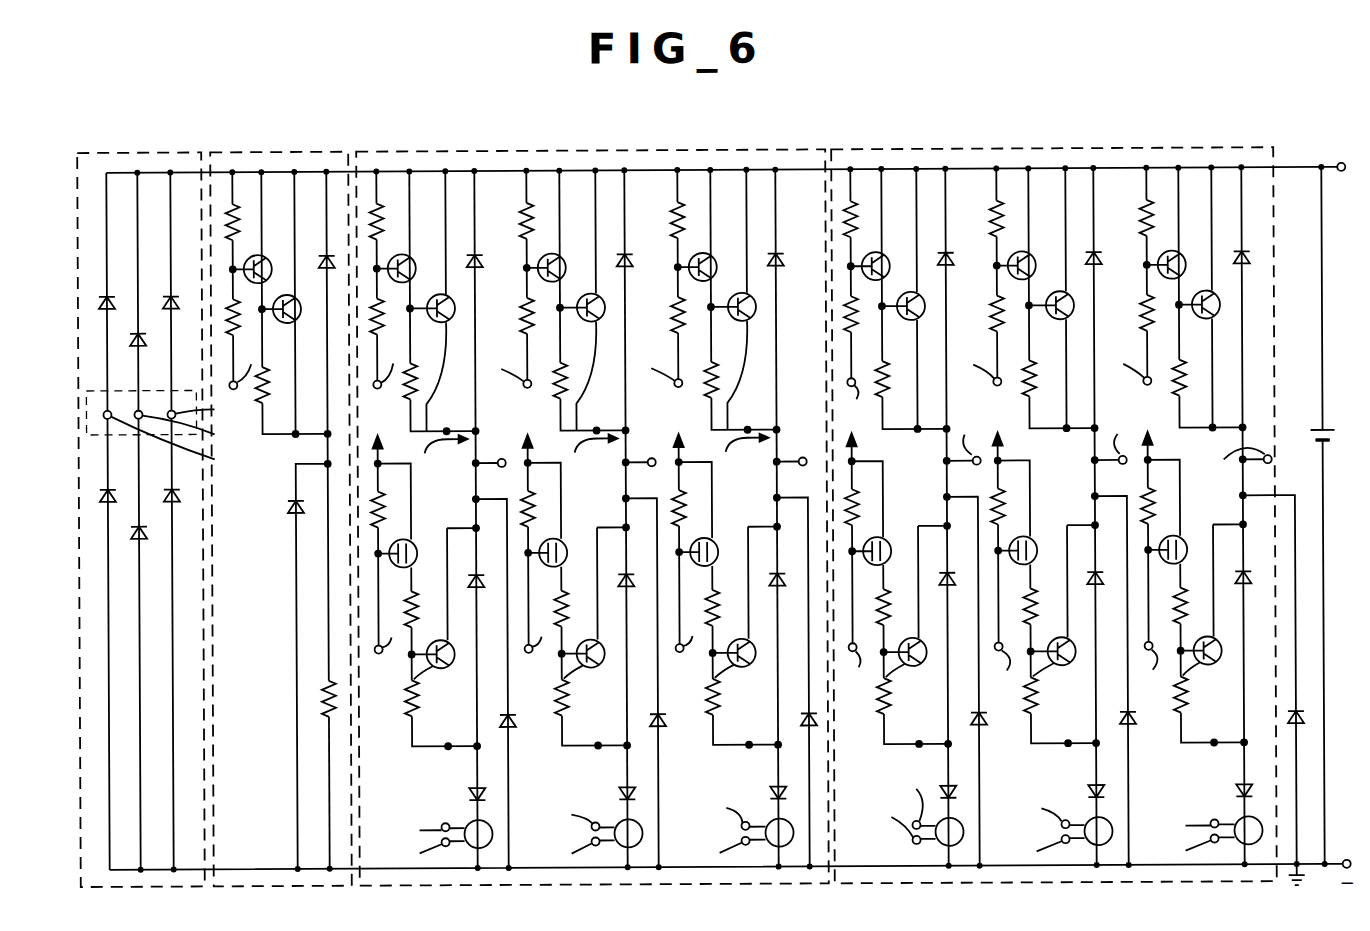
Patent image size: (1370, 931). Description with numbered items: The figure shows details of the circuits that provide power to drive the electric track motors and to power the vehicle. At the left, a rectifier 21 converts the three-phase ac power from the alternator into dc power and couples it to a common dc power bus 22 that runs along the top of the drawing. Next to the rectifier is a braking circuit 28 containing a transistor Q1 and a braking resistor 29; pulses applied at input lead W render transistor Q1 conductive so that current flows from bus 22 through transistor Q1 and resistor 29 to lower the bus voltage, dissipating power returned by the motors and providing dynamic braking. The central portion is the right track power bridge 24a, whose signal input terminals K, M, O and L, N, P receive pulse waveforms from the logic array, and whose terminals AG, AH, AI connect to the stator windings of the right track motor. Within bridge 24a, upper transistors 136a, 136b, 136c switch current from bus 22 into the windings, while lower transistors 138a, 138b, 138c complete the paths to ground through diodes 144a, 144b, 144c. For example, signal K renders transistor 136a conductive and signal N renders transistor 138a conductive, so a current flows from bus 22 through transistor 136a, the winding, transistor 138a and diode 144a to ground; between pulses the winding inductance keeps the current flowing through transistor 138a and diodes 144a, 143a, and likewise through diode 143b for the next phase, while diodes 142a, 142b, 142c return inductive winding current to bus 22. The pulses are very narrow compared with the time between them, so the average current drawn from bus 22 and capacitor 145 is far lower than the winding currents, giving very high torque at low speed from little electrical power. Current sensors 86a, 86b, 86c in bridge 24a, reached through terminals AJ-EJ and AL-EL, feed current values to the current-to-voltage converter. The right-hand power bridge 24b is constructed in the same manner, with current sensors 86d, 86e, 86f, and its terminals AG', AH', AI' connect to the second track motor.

The rectifier 21 is at (118, 152).
The braking circuit 28 is at (281, 503).
The power bridge 24a is at (553, 152).
The dc power bus 22 is at (700, 170).
The power bridge 24b is at (955, 152).
The braking resistor 29 is at (322, 706).
The transistor Q1 is at (300, 320).
The transistor 136a is at (388, 391).
The transistor 136b is at (528, 391).
The transistor 136c is at (676, 390).
The transistor 138a is at (539, 694).
The transistor 138b is at (690, 693).
The transistor 138c is at (390, 694).
The diode 142a is at (633, 262).
The diode 142b is at (784, 262).
The diode 142c is at (483, 262).
The diode 143a is at (509, 726).
The diode 143b is at (659, 726).
The diode 144a is at (618, 793).
The diode 144b is at (769, 793).
The diode 144c is at (467, 793).
The current sensor 86a is at (491, 833).
The current sensor 86b is at (641, 833).
The current sensor 86c is at (792, 833).
The current sensor 86d is at (962, 833).
The current sensor 86e is at (1090, 820).
The current sensor 86f is at (1240, 820).
The capacitor 145 is at (1320, 430).